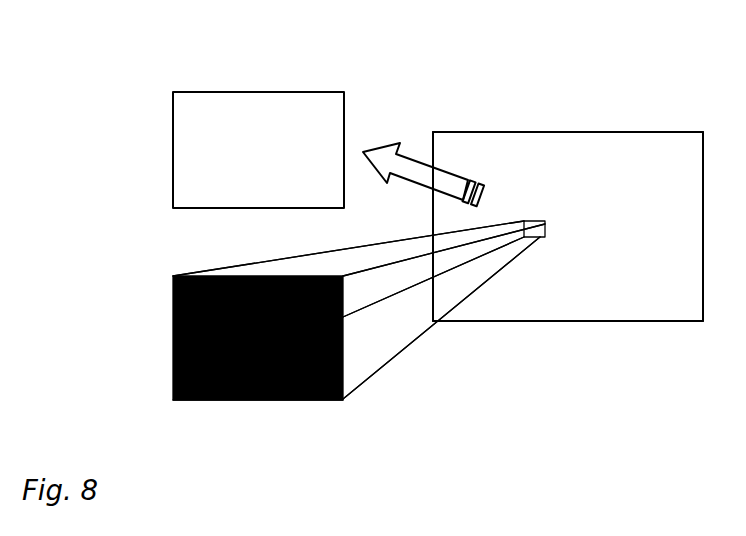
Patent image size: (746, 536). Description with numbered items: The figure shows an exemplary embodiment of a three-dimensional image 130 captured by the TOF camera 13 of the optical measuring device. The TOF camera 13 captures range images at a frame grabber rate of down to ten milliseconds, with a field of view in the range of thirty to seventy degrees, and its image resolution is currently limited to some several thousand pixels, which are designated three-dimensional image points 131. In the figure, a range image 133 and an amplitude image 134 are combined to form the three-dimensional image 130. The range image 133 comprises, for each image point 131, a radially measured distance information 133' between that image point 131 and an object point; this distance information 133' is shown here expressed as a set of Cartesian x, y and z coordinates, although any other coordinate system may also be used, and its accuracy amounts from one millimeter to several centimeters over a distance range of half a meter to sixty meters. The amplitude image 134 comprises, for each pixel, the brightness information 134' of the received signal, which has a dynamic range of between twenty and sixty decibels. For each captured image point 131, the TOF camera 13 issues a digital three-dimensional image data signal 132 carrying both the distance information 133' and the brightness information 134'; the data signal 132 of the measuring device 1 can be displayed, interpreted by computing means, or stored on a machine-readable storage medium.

The measuring system 1 is at (484, 402).
The TOF camera 13 is at (623, 153).
The 3D image 130 is at (683, 302).
The 3D image point 131 is at (545, 228).
The digital 3D image data signal 132 is at (484, 402).
The range image 133 is at (188, 150).
The distance information 133' is at (251, 100).
The amplitude image 134 is at (182, 338).
The brightness information 134' is at (258, 436).